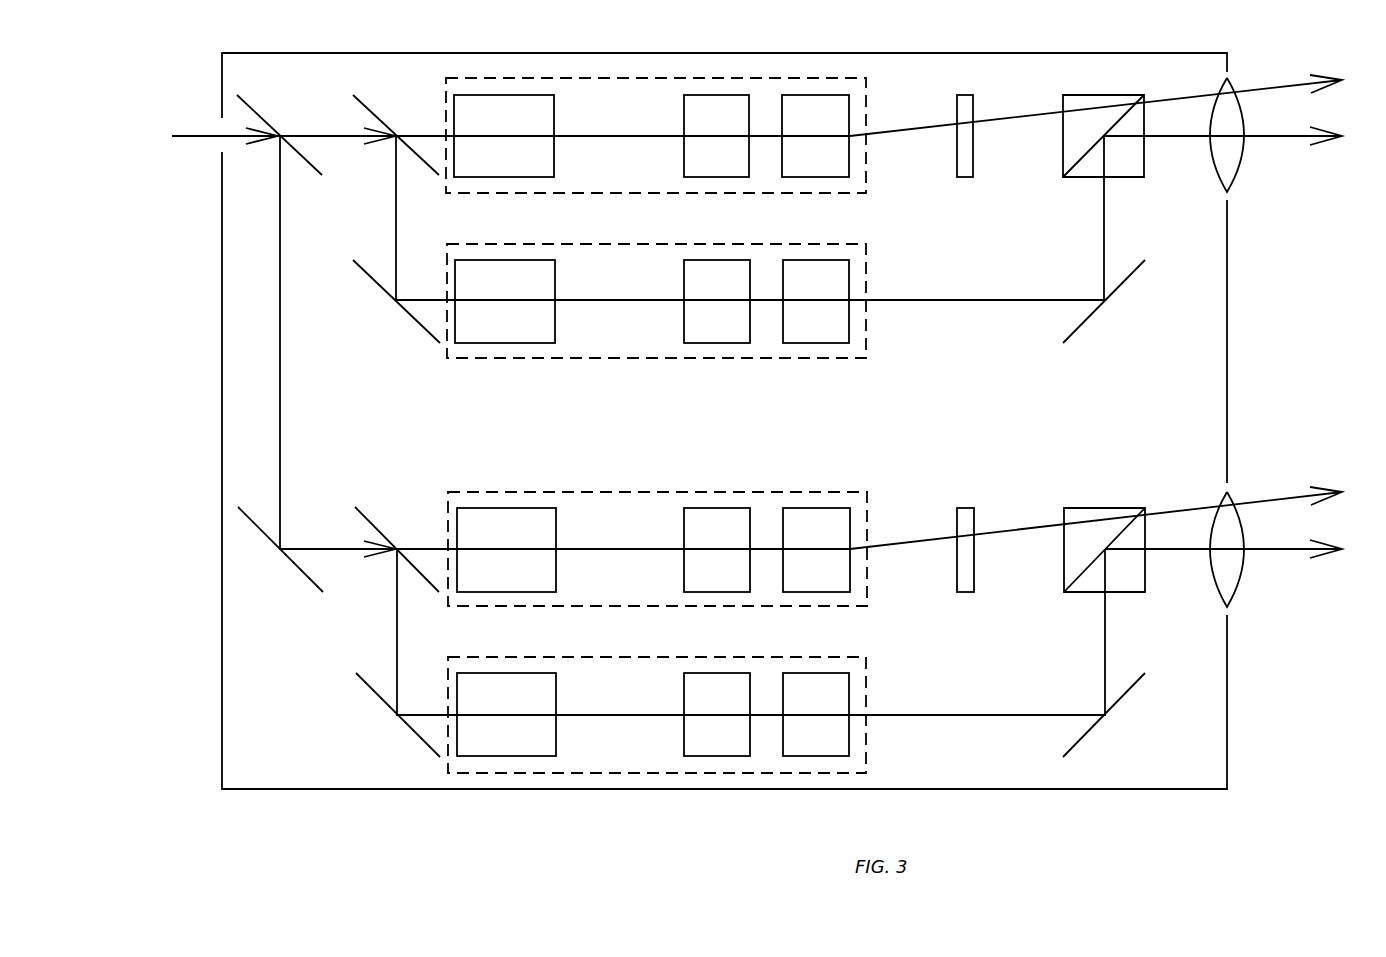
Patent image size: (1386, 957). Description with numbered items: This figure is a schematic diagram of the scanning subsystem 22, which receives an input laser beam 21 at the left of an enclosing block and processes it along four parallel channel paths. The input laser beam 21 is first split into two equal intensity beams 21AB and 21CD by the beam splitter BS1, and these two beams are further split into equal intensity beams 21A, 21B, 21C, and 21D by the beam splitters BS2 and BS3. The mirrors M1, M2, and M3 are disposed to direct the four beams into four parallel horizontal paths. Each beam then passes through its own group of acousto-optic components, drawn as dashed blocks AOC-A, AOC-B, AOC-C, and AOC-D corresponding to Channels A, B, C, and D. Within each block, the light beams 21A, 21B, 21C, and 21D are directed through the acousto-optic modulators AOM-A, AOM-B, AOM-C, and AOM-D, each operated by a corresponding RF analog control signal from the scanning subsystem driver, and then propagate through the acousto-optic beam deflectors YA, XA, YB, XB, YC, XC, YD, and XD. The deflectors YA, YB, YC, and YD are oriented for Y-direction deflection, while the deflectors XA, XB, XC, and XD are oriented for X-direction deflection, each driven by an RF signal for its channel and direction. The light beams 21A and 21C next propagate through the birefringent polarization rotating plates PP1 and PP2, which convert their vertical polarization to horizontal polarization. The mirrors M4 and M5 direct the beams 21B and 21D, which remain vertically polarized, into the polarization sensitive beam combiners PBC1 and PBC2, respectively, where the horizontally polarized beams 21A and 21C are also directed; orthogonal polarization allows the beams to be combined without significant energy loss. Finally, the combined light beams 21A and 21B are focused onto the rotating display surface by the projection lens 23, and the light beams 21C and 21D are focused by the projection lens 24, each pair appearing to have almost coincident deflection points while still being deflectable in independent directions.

The scanning subsystem 22 is at (340, 53).
The input laser beam 21 is at (188, 136).
The beam 21AB is at (333, 137).
The beam 21CD is at (280, 423).
The light beam 21A is at (905, 132).
The light beam 21B is at (910, 299).
The light beam 21C is at (910, 540).
The light beam 21D is at (910, 714).
The projection lens 23 is at (1233, 180).
The projection lens 24 is at (1233, 594).
The beam splitter BS1 is at (247, 103).
The beam splitter BS2 is at (365, 103).
The beam splitter BS3 is at (363, 512).
The mirror M1 is at (292, 563).
The mirror M2 is at (373, 279).
The mirror M3 is at (365, 680).
The mirror M4 is at (1137, 268).
The mirror M5 is at (1137, 682).
The acousto-optic modulator AOM-A is at (488, 95).
The acousto-optic modulator AOM-B is at (490, 260).
The acousto-optic modulator AOM-C is at (490, 508).
The acousto-optic modulator AOM-D is at (490, 673).
The acousto-optic components group AOC-A is at (643, 78).
The acousto-optic components group AOC-B is at (648, 359).
The acousto-optic components group AOC-C is at (648, 492).
The acousto-optic components group AOC-D is at (643, 773).
The acousto-optic beam deflector YA is at (722, 95).
The acousto-optic beam deflector XA is at (810, 95).
The acousto-optic beam deflector YB is at (723, 260).
The acousto-optic beam deflector XB is at (810, 260).
The acousto-optic beam deflector YC is at (722, 508).
The acousto-optic beam deflector XC is at (810, 508).
The acousto-optic beam deflector YD is at (723, 673).
The acousto-optic beam deflector XD is at (810, 673).
The birefringent polarization rotating plate PP1 is at (965, 95).
The birefringent polarization rotating plate PP2 is at (965, 508).
The polarization sensitive beam combiner PBC1 is at (1090, 95).
The polarization sensitive beam combiner PBC2 is at (1093, 508).